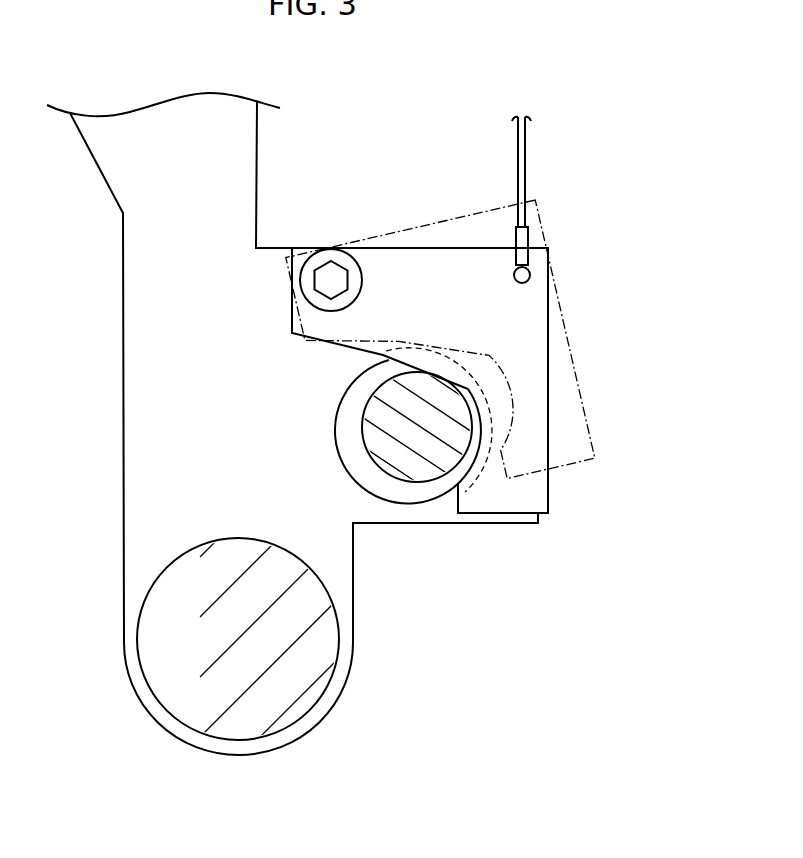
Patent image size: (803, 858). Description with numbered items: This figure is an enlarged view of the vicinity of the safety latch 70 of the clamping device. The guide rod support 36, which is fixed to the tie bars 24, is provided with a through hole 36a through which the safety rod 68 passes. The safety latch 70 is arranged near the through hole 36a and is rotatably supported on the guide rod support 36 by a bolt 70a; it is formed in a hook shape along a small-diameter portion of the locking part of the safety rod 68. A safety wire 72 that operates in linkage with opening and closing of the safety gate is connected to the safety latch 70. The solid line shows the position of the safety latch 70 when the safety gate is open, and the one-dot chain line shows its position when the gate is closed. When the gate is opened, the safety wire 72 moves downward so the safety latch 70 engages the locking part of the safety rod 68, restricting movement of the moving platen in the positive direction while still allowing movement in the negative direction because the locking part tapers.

The tie bar 24 is at (240, 713).
The guide rod support 36 is at (145, 328).
The through hole 36a is at (377, 497).
The safety rod 68 is at (380, 418).
The safety latch 70 is at (549, 342).
The bolt 70a is at (352, 281).
The safety wire 72 is at (526, 140).